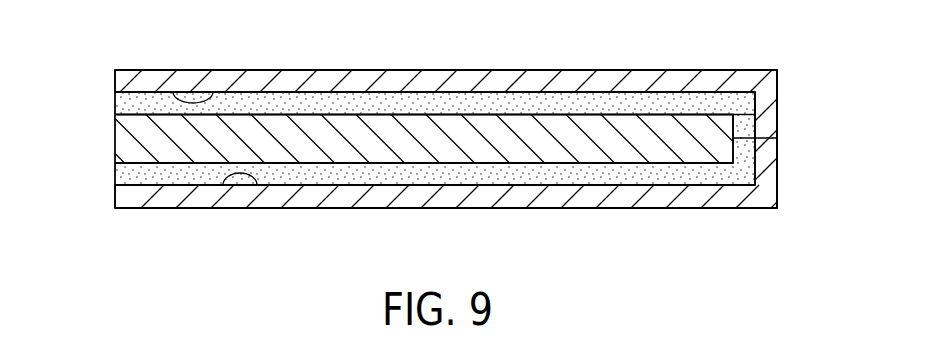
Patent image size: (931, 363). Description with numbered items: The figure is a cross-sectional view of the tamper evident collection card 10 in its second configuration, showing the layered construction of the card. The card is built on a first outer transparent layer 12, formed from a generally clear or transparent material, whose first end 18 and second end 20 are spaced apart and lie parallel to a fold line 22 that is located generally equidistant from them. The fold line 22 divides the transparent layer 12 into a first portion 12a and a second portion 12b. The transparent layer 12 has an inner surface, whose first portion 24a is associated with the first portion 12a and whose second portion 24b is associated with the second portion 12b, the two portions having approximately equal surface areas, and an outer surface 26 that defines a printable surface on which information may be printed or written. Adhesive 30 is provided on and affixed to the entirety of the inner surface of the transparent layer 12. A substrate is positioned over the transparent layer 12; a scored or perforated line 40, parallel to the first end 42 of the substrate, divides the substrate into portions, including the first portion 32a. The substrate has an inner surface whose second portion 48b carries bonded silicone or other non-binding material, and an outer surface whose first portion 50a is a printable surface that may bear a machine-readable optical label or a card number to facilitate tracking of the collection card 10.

The tamper evident collection card 10 is at (316, 233).
The first outer transparent layer 12 is at (158, 211).
The first portion of transparent layer 12a is at (373, 208).
The second portion of transparent layer 12b is at (565, 80).
The first end of transparent layer 18 is at (115, 191).
The second end of transparent layer 20 is at (115, 78).
The fold line 22 is at (756, 137).
The first portion of inner surface 24a is at (257, 185).
The second portion of inner surface 24b is at (173, 92).
The outer surface of transparent layer 26 is at (227, 70).
The adhesive 30 is at (668, 100).
The first portion of substrate 32a is at (719, 107).
The perforated line 40 is at (733, 152).
The first end of substrate 42 is at (115, 136).
The second portion of inner surface of substrate 48b is at (556, 163).
The first portion of outer surface of substrate 50a is at (618, 113).